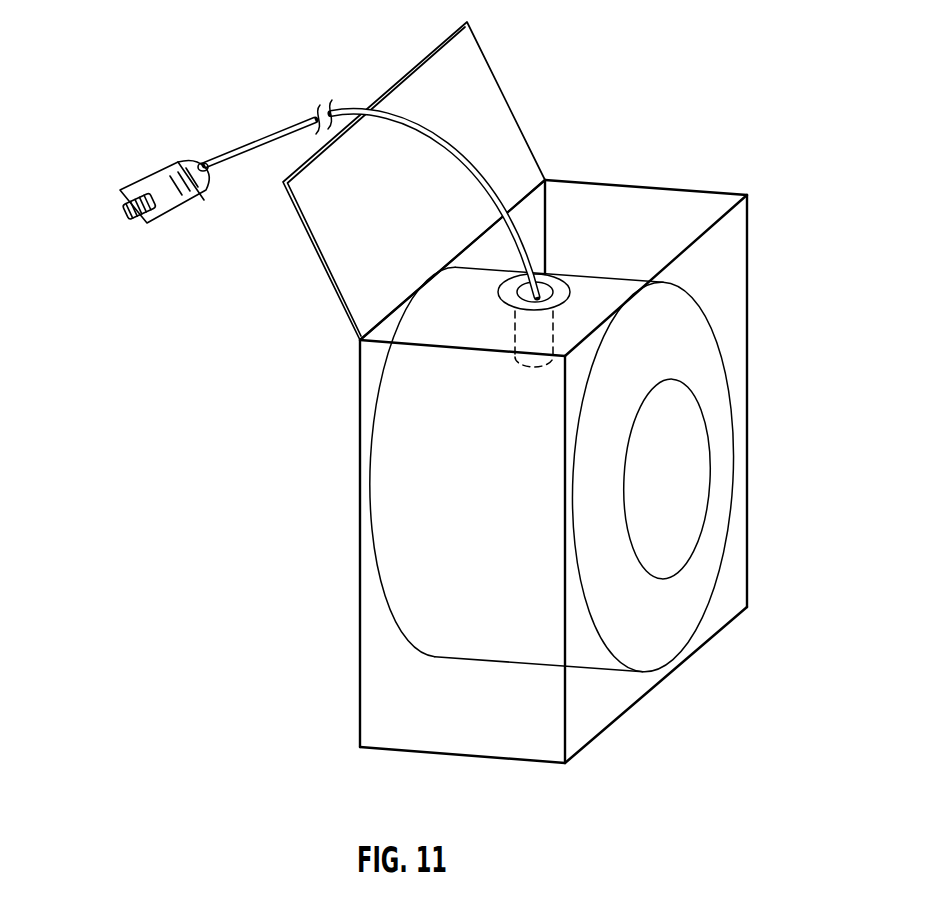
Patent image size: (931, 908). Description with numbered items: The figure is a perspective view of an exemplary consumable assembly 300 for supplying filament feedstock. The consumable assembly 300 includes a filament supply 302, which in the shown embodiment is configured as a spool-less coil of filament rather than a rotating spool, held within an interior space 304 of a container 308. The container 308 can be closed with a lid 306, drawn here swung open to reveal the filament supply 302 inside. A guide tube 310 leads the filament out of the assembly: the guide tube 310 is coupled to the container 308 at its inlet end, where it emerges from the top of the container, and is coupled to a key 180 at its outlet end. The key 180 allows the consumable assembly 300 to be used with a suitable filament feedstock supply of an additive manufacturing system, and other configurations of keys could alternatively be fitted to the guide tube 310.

The consumable assembly 300 is at (770, 121).
The filament supply 302 is at (727, 427).
The interior space 304 is at (623, 207).
The lid 306 is at (483, 97).
The container 308 is at (377, 697).
The guide tube 310 is at (355, 118).
The key 180 is at (120, 188).